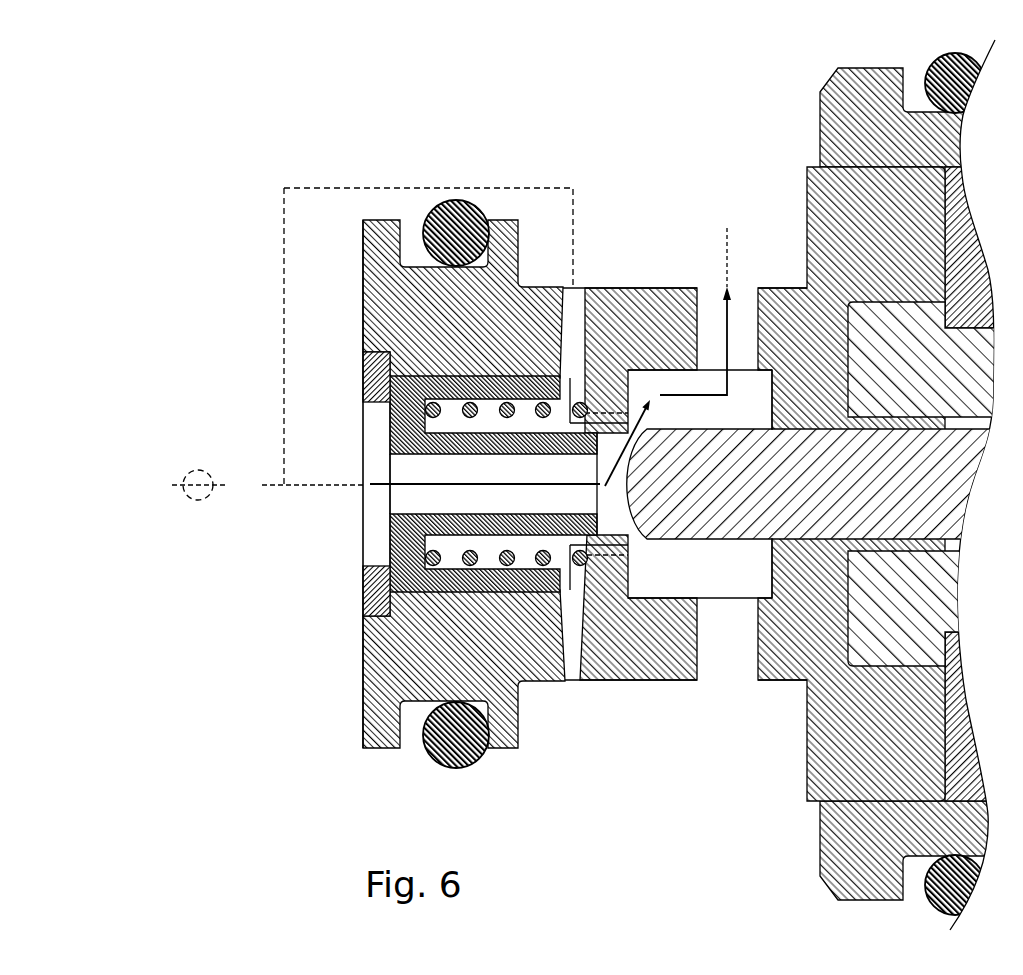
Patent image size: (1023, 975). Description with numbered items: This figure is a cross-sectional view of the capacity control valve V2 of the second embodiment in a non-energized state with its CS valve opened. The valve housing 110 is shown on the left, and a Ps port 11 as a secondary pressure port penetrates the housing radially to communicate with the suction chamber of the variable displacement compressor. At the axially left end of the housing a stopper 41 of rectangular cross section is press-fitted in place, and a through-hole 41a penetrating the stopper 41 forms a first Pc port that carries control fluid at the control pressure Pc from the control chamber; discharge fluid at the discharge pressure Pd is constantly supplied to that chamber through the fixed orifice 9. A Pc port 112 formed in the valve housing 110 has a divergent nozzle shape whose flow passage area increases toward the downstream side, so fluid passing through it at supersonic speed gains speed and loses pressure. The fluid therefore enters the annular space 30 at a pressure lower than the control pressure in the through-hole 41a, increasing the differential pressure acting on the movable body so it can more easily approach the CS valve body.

The valve housing 110 is at (362, 300).
The space 30 is at (490, 418).
The Pc port 112 is at (573, 370).
The Ps port 11 is at (757, 300).
The stopper 41 is at (360, 597).
The through-hole 41a is at (377, 568).
The fixed orifice 9 is at (198, 468).
The capacity control valve V2 is at (771, 79).